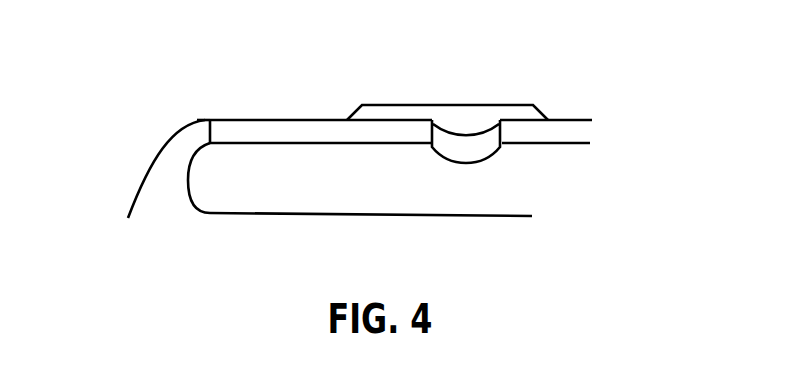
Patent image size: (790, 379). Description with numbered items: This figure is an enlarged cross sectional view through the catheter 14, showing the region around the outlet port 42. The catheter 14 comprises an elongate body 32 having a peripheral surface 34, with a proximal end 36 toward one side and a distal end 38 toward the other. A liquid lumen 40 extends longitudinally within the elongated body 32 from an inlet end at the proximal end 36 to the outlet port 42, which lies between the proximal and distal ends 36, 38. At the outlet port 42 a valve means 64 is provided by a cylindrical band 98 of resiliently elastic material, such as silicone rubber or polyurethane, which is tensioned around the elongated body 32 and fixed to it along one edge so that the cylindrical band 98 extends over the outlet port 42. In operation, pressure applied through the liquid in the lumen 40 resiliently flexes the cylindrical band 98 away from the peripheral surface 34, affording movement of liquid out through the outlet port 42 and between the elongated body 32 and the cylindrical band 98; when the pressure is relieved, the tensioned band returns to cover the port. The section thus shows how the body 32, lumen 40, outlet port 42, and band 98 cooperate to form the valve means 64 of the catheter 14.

The catheter 14 is at (232, 108).
The elongate body 32 is at (162, 185).
The peripheral surface 34 is at (193, 119).
The proximal end 36 is at (67, 181).
The distal end 38 is at (681, 185).
The liquid lumen 40 is at (257, 178).
The outlet port 42 is at (478, 148).
The valve means 64 is at (462, 82).
The cylindrical band 98 is at (531, 115).